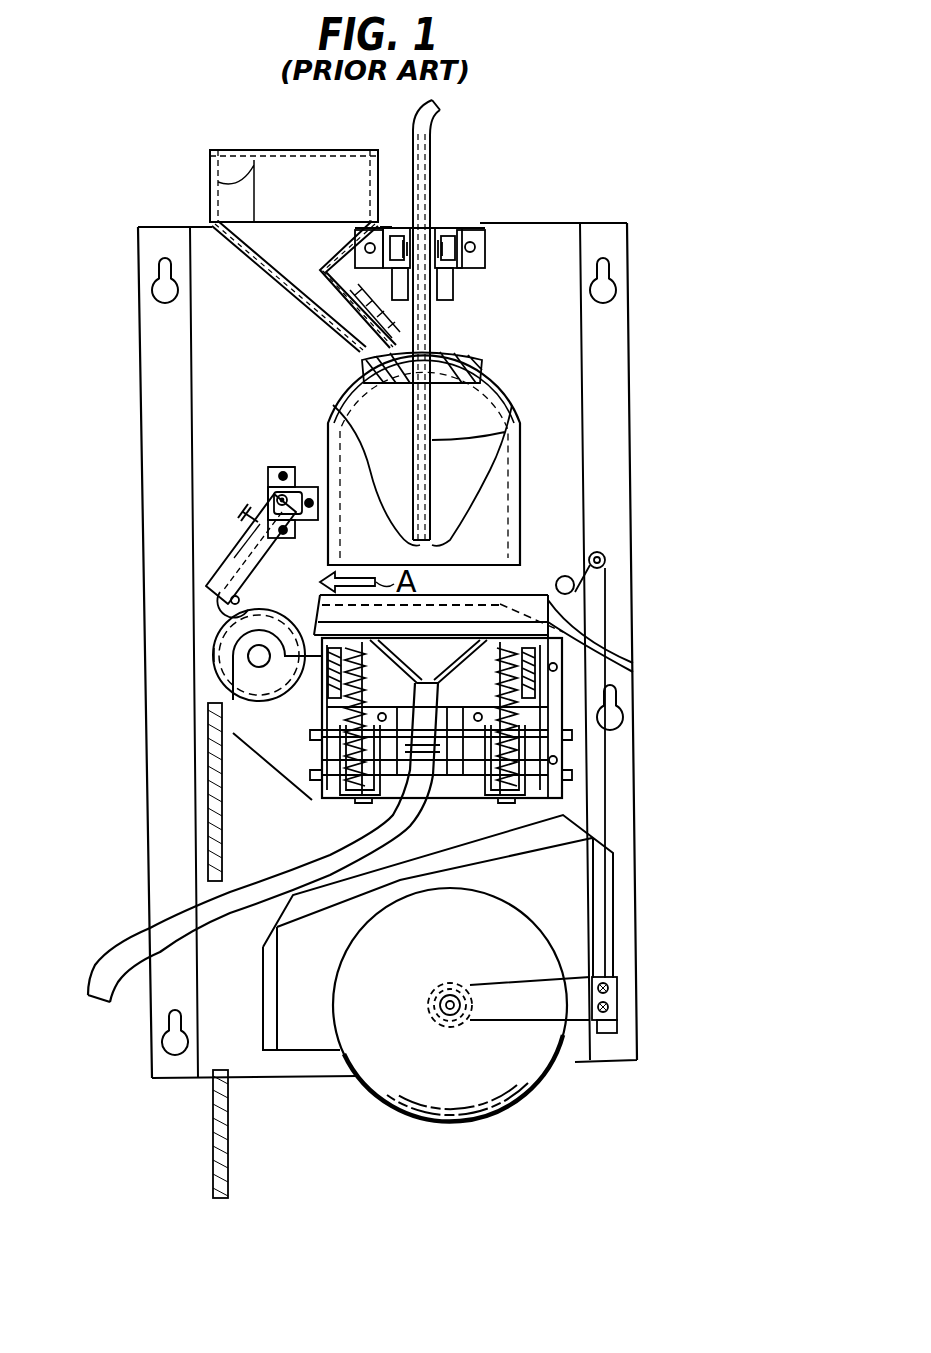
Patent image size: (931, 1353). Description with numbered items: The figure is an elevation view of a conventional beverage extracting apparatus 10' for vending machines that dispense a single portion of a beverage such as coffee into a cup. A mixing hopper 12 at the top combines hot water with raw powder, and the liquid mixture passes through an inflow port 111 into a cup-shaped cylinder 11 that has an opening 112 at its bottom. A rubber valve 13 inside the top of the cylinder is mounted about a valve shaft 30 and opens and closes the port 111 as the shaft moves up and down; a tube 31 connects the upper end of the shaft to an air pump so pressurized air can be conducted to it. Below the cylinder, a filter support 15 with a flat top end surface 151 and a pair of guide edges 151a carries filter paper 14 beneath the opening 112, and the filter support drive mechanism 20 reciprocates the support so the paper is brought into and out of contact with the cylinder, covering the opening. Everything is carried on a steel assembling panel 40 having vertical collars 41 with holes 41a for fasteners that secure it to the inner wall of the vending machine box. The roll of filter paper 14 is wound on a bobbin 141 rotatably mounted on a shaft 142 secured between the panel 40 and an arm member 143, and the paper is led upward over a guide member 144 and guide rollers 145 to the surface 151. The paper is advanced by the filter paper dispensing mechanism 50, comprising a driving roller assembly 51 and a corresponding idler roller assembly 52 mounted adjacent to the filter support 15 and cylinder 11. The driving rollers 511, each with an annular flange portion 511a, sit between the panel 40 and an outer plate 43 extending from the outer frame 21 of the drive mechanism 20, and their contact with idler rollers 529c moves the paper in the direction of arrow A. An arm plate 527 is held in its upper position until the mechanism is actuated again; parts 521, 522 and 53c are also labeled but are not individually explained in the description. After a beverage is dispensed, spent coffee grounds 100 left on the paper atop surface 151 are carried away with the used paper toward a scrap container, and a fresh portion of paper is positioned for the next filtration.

The beverage extracting apparatus 10' is at (382, 158).
The cup-shaped cylinder 11 is at (500, 383).
The mixing hopper 12 is at (372, 150).
The valve 13 is at (497, 357).
The filter paper 14 is at (574, 588).
The filter support 15 is at (612, 650).
The filter support drive mechanism 20 is at (565, 748).
The outer frame 21 is at (312, 790).
The valve shaft 30 is at (440, 445).
The tube 31 is at (436, 140).
The assembling panel 40 is at (560, 238).
The collars 41 is at (150, 360).
The holes 41a is at (162, 1047).
The outer plate 43 is at (286, 765).
The filter paper dispensing mechanism 50 is at (240, 655).
The driving roller assembly 51 is at (228, 690).
The idler roller assembly 52 is at (248, 560).
The mounting bracket 53c is at (283, 470).
The grounds 100 is at (213, 1160).
The inflow port 111 is at (372, 350).
The opening 112 is at (510, 537).
The bobbin 141 is at (443, 1030).
The shaft 142 is at (465, 1030).
The arm member 143 is at (530, 1010).
The guide member 144 is at (597, 1043).
The guide rollers 145 is at (606, 560).
The flat top end surface 151 is at (518, 597).
The guide edges 151a is at (563, 632).
The driving rollers 511 is at (232, 678).
The annular flange portion 511a is at (215, 655).
The solenoid mount 521 is at (270, 476).
The solenoid bracket 522 is at (268, 496).
The arm plate 527 is at (243, 515).
The idler rollers 529c is at (235, 604).